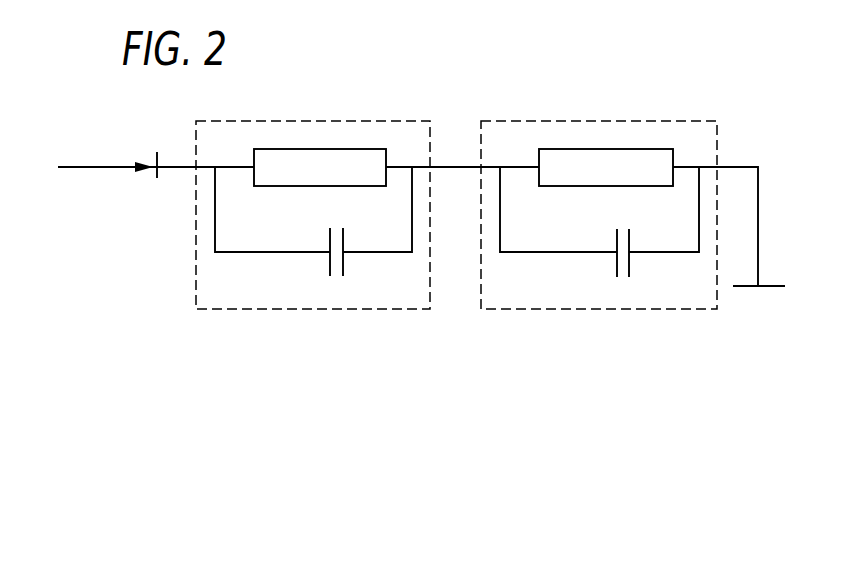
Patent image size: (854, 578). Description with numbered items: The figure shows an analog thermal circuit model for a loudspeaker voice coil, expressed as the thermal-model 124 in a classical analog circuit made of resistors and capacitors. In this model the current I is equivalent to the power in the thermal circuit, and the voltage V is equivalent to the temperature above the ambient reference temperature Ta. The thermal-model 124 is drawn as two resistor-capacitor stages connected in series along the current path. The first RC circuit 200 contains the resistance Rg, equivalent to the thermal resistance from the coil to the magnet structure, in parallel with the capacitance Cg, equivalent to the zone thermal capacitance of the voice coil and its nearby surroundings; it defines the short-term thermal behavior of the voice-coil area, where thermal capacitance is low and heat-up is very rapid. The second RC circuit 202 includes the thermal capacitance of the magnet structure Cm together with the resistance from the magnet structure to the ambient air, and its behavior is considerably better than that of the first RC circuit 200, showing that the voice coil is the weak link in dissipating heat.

The thermal-model 124 is at (447, 392).
The first RC circuit 200 is at (376, 309).
The second RC circuit 202 is at (597, 309).